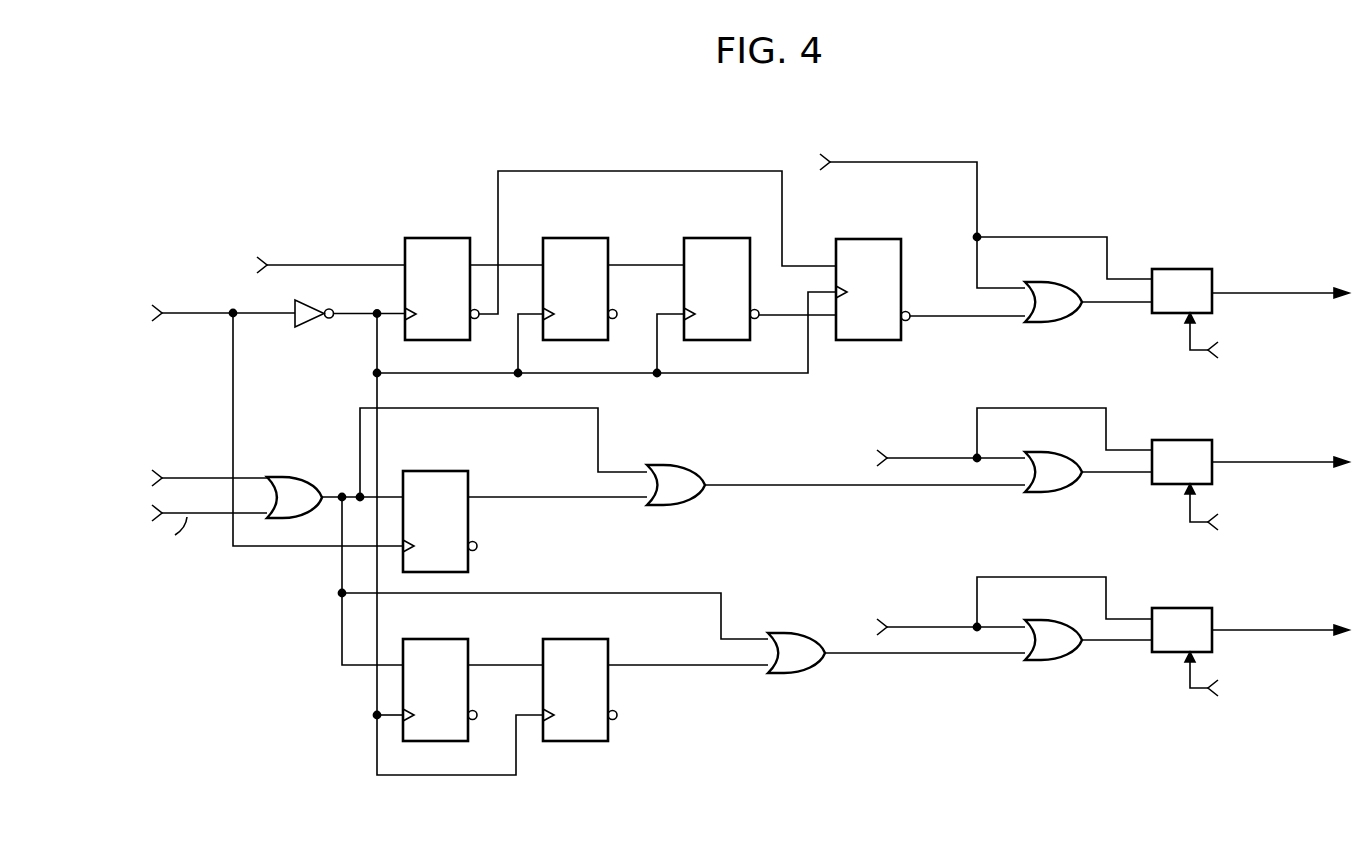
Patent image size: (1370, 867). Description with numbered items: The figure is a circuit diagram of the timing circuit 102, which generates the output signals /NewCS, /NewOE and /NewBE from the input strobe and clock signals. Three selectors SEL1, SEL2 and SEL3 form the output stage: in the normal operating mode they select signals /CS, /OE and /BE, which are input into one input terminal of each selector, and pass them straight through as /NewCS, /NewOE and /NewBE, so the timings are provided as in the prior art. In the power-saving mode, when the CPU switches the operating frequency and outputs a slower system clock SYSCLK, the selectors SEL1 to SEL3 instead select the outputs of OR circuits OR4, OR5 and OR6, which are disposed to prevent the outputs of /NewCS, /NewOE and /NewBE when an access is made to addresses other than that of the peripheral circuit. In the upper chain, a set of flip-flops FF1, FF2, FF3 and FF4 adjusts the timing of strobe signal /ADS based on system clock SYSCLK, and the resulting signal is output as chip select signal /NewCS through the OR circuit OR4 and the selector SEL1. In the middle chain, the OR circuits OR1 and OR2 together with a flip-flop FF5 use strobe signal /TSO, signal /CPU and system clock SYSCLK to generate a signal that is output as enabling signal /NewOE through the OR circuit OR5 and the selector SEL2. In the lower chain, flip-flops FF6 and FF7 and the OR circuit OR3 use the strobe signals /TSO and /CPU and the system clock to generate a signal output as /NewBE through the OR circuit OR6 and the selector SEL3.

The flip-flop FF1 is at (432, 238).
The flip-flop FF2 is at (588, 238).
The flip-flop FF3 is at (717, 238).
The flip-flop FF4 is at (880, 239).
The flip-flop FF5 is at (443, 471).
The flip-flop FF6 is at (443, 639).
The flip-flop FF7 is at (580, 639).
The OR circuit OR1 is at (285, 477).
The OR circuit OR2 is at (670, 465).
The OR circuit OR3 is at (787, 633).
The OR circuit OR4 is at (1045, 328).
The OR circuit OR5 is at (1042, 497).
The OR circuit OR6 is at (1042, 665).
The selector SEL1 is at (1177, 269).
The selector SEL2 is at (1177, 440).
The selector SEL3 is at (1177, 608).
The timing circuit 102 is at (1176, 157).